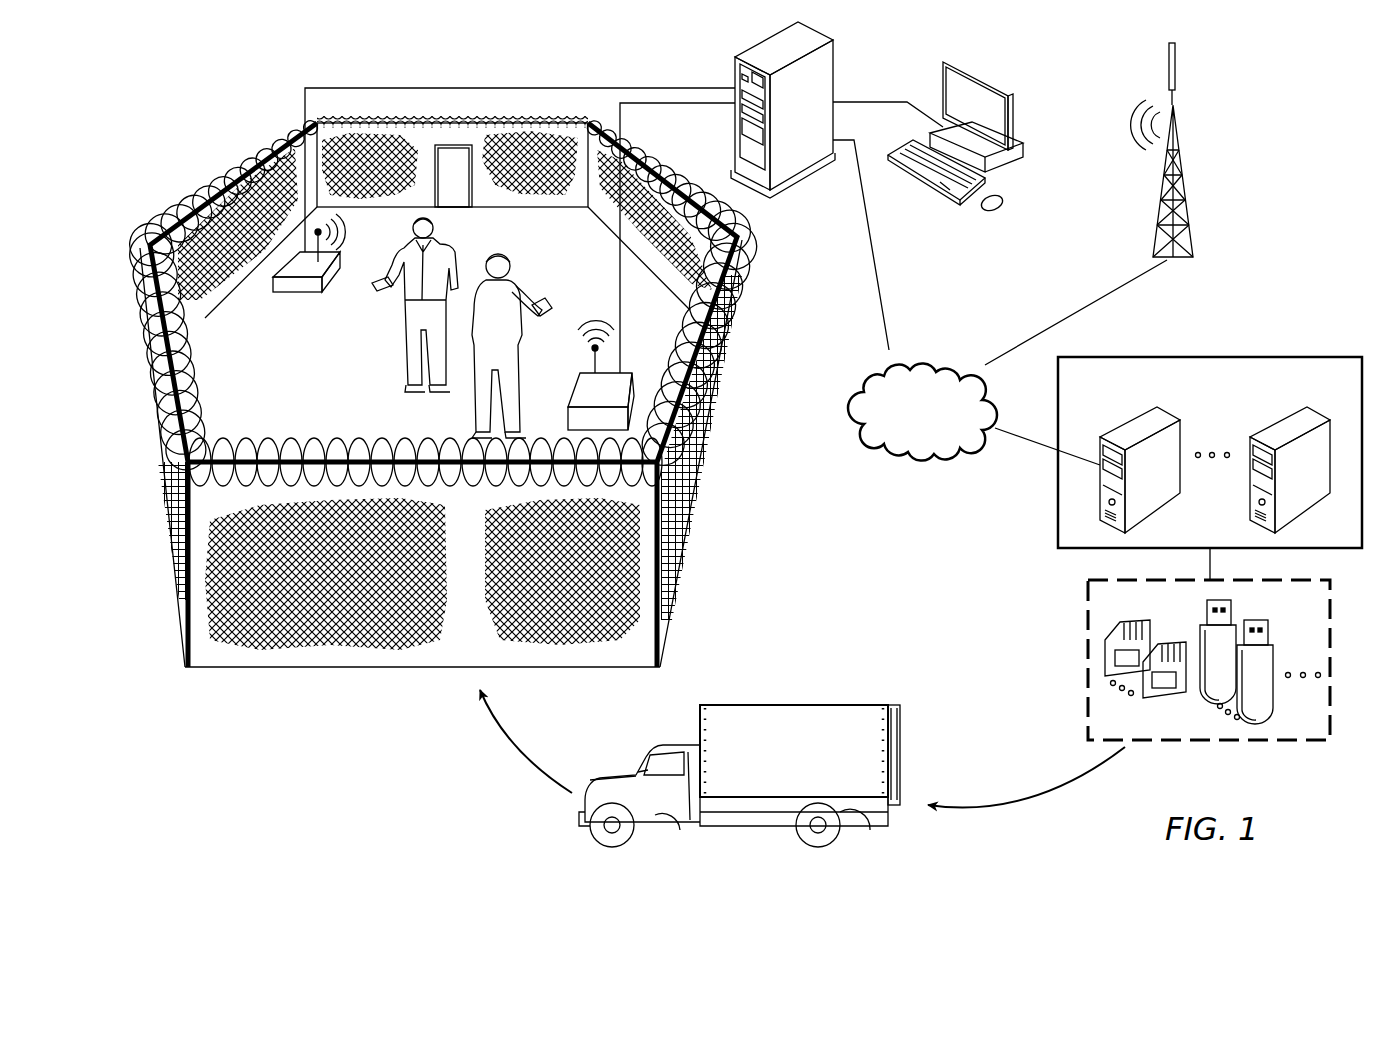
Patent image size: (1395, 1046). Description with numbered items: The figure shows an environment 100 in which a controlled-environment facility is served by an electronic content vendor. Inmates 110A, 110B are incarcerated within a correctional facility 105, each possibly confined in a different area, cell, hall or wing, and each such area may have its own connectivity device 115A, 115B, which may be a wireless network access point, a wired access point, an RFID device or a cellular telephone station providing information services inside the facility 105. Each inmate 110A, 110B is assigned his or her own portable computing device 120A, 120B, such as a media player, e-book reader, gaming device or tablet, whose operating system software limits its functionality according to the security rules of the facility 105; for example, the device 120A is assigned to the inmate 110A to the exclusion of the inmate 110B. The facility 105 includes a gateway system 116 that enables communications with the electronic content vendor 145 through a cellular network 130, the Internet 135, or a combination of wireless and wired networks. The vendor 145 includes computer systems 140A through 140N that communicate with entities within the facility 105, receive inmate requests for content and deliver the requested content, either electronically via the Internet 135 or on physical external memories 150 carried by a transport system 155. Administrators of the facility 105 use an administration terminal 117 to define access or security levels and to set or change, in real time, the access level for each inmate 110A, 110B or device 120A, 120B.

The environment 100 is at (238, 784).
The correctional facility 105 is at (220, 163).
The inmate 110A is at (407, 332).
The inmate 110B is at (512, 258).
The connectivity device 115A is at (303, 270).
The connectivity device 115B is at (580, 392).
The gateway system 116 is at (823, 83).
The administration terminal 117 is at (1012, 110).
The portable computing device 120A is at (379, 281).
The portable computing device 120B is at (541, 305).
The cellular network 130 is at (1180, 146).
The Internet 135 is at (925, 350).
The computer system 140A is at (1122, 428).
The computer system 140N is at (1275, 427).
The electronic content vendor 145 is at (1305, 352).
The external memory 150 is at (1290, 750).
The transport system 155 is at (803, 705).